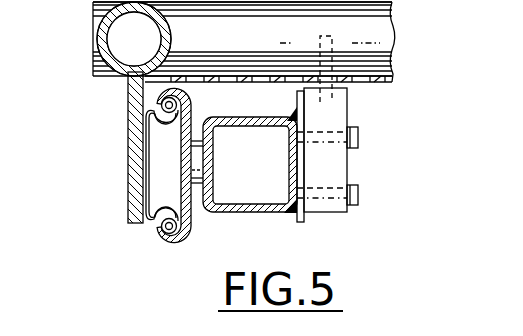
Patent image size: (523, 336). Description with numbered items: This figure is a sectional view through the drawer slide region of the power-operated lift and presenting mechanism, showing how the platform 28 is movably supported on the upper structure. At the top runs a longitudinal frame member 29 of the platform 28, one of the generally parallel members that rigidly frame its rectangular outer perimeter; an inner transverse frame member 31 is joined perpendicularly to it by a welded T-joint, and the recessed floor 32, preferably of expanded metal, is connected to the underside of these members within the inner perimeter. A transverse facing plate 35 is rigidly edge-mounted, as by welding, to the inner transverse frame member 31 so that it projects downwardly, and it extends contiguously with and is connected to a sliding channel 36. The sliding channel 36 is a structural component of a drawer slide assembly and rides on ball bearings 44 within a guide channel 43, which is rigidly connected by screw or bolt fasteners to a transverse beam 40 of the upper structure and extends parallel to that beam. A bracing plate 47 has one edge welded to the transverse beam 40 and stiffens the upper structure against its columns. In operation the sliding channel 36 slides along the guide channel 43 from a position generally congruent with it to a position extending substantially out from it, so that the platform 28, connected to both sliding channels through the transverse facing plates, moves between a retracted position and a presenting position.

The platform 28 is at (410, 36).
The longitudinal frame member 29 is at (242, 52).
The inner transverse frame member 31 is at (97, 42).
The recessed floor 32 is at (372, 82).
The transverse facing plate 35 is at (128, 150).
The sliding channel 36 is at (158, 188).
The transverse beam 40 is at (212, 163).
The guide channel 43 is at (188, 230).
The ball bearings 44 is at (162, 105).
The bracing plate 47 is at (66, 0).